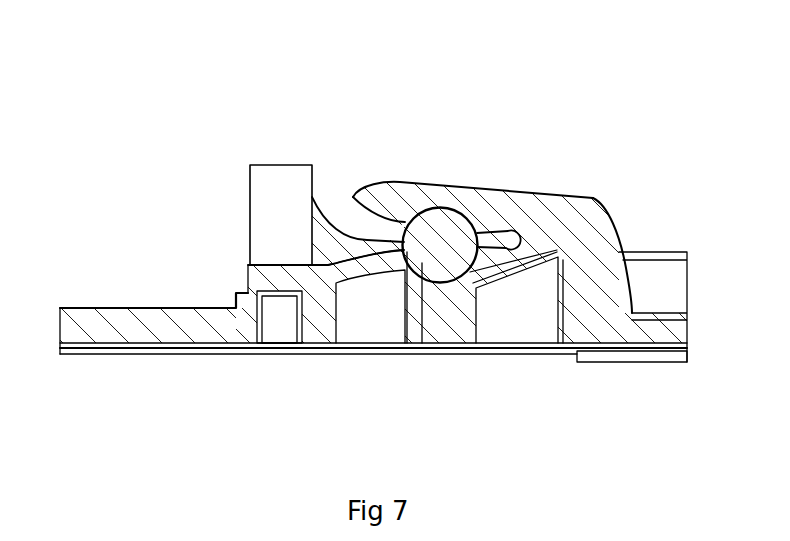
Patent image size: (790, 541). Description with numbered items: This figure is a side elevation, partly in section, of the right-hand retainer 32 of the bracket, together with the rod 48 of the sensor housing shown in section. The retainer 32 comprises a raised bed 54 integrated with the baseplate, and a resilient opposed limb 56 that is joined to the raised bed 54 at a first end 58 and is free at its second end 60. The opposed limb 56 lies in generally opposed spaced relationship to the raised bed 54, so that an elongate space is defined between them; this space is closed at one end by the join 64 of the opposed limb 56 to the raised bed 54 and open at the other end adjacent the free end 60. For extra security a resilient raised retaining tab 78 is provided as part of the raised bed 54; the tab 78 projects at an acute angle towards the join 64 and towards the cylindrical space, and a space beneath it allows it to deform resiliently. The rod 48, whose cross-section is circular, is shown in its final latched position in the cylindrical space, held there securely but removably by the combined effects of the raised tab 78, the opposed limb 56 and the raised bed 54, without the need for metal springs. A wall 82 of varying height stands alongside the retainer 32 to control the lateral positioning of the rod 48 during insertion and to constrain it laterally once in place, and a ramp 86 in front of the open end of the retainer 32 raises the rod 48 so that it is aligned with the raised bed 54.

The retainer 32 is at (508, 88).
The rod 48 is at (442, 248).
The raised bed 54 is at (440, 300).
The opposed limb 56 is at (437, 195).
The first end 58 is at (608, 190).
The second end 60 is at (352, 197).
The join 64 is at (567, 240).
The raised retaining tab 78 is at (370, 265).
The wall 82 is at (278, 183).
The ramp 86 is at (115, 322).